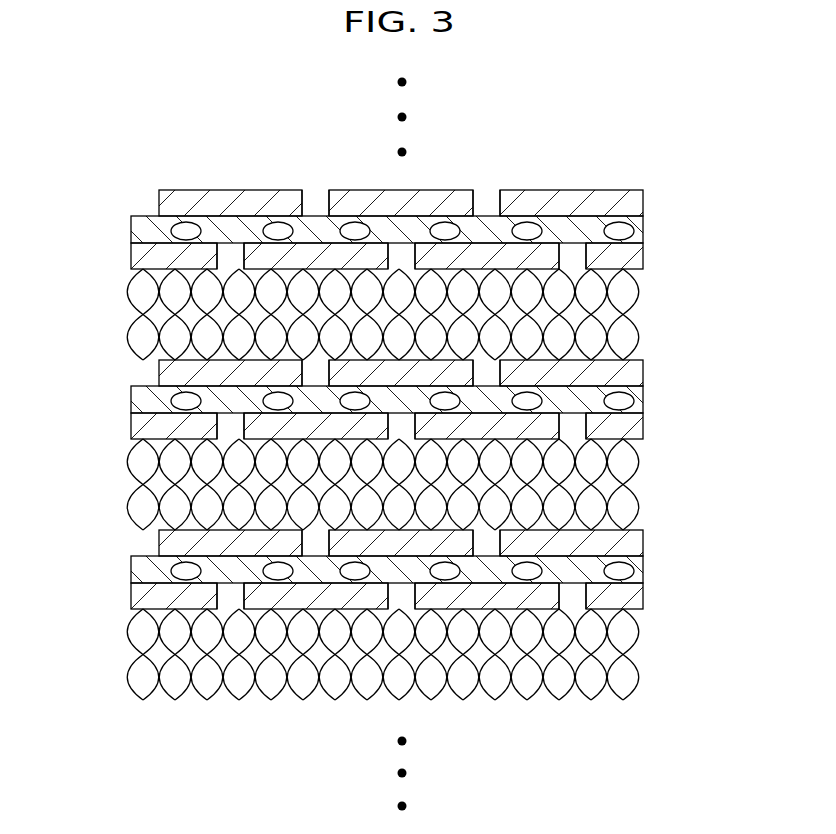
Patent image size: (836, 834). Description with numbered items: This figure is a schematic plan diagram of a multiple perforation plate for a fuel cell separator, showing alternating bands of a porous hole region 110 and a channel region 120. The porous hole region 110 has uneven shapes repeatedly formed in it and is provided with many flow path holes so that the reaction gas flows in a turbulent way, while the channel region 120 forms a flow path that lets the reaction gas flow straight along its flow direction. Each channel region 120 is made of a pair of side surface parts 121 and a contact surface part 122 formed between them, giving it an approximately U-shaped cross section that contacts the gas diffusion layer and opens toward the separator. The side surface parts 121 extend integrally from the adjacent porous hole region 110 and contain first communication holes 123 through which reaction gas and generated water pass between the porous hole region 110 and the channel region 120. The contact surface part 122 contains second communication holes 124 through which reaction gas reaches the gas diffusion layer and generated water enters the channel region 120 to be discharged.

The porous hole region 110 is at (430, 484).
The channel region 120 is at (390, 391).
The side surface parts 121 is at (158, 197).
The contact surface part 122 is at (131, 229).
The first communication holes 123 is at (403, 258).
The second communication holes 124 is at (186, 231).